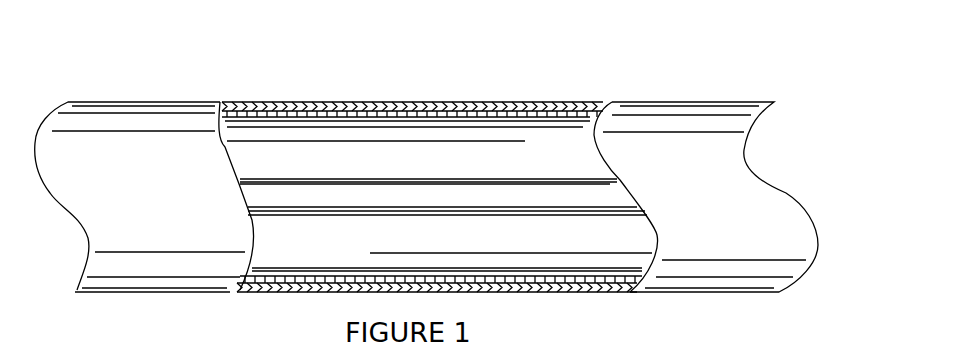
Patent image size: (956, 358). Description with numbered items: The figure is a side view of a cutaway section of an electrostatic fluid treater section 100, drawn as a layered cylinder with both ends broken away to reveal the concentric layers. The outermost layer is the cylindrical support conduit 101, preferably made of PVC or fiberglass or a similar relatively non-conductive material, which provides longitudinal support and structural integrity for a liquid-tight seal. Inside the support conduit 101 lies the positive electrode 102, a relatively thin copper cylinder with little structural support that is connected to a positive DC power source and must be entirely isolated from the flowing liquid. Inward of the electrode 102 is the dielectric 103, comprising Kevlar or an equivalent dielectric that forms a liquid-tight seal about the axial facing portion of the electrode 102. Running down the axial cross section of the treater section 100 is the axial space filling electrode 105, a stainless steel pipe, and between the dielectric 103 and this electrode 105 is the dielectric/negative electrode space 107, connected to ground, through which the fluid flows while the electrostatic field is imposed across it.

The treater section 100 is at (180, 91).
The cylindrical support conduit 101 is at (601, 102).
The positive electrode 102 is at (532, 113).
The dielectric 103 is at (462, 115).
The axial space filling electrode 105 is at (323, 197).
The dielectric/negative electrode space 107 is at (352, 153).